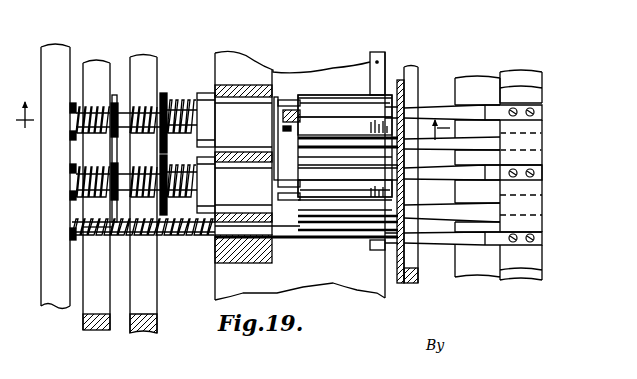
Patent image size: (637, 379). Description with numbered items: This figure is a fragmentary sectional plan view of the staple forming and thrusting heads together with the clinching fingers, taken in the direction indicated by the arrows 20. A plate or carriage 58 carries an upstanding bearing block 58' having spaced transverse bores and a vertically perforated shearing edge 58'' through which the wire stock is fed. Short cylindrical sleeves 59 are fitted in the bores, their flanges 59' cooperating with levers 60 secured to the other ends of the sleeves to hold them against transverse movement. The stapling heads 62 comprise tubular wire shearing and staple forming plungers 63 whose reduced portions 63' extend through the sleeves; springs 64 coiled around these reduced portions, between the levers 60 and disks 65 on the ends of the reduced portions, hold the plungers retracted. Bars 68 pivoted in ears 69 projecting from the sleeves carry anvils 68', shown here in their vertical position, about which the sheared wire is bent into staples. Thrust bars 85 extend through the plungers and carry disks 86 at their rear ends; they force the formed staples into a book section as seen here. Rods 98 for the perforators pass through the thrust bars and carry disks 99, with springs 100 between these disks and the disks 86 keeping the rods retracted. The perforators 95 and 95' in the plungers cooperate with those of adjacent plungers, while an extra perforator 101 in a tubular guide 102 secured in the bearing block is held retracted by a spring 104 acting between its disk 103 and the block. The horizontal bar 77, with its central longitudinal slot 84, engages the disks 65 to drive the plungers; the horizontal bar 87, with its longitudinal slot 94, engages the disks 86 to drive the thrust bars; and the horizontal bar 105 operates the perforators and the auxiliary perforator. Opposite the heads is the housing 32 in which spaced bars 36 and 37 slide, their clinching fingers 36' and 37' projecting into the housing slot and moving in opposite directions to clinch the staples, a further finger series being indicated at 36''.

The horizontal bar 105 is at (52, 309).
The disks 99 is at (73, 180).
The longitudinal slot 94 is at (93, 66).
The horizontal bar 87 is at (96, 329).
The central longitudinal slot 84 is at (143, 64).
The horizontal bar 77 is at (158, 326).
The disks 86 is at (113, 94).
The disks 65 is at (165, 97).
The rods 98 is at (96, 110).
The springs 100 is at (97, 167).
The thrust bars 85 is at (150, 110).
The springs 64 is at (179, 99).
The levers 60 is at (208, 128).
The disks 103 is at (70, 228).
The springs 104 is at (101, 226).
The reduced portions 63' is at (191, 145).
The upstanding bearing block 58' is at (300, 175).
The plate or carriage 58 is at (300, 279).
The shearing edge 58'' is at (386, 62).
The short cylindrical sleeves 59 is at (243, 166).
The flanges 59' is at (257, 152).
The ears 69 is at (300, 127).
The tubular wire shearing and staple forming plungers 63 is at (343, 167).
The stapling heads 62 is at (346, 93).
The bars 68 is at (345, 146).
The anvils 68' is at (345, 157).
The tubular guides 102 is at (338, 231).
The extra punch or perforator 101 is at (418, 248).
The punches or perforators 95' is at (473, 153).
The punches or perforators 95 is at (452, 183).
The bar 37 is at (543, 75).
The bar 36 is at (543, 95).
The clinching tines or fingers 36' is at (477, 91).
The clinching tines or fingers 37' is at (477, 196).
The block 36'' is at (545, 196).
The housing 32 is at (480, 277).
The direction arrow 20 is at (232, 129).